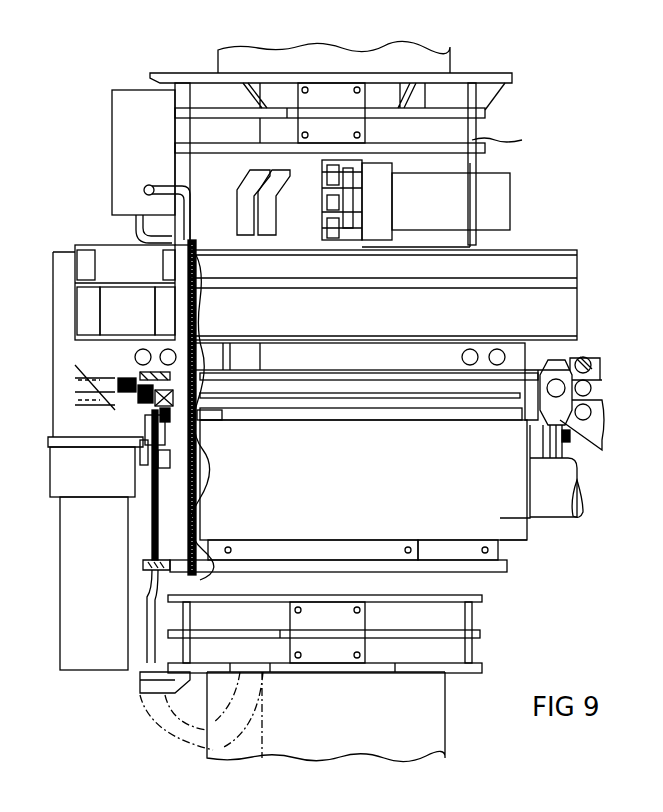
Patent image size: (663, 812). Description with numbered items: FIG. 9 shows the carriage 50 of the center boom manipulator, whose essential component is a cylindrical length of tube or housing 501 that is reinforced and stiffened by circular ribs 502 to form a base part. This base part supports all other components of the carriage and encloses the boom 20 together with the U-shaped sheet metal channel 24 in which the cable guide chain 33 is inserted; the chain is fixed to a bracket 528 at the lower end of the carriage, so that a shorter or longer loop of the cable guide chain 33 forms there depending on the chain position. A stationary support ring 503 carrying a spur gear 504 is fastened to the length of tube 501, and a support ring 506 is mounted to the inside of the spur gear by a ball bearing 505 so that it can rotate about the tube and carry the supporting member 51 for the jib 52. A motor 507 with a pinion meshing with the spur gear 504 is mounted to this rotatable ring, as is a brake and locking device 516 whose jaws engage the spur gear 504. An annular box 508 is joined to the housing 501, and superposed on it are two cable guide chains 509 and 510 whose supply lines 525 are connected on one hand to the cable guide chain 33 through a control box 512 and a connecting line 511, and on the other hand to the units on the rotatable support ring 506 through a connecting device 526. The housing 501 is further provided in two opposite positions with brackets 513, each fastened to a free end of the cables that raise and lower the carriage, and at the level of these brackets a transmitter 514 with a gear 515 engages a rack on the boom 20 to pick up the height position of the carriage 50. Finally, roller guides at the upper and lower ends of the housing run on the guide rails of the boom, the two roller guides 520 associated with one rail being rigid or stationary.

The boom 20 is at (398, 735).
The U-shaped sheet metal channel 24 is at (247, 743).
The cable guide chain 33 is at (157, 737).
The carriage 50 is at (552, 153).
The supporting member 51 is at (510, 520).
The jib 52 is at (557, 503).
The length of tube 501 is at (147, 528).
The circular ribs 502 is at (485, 52).
The stationary support ring 503 is at (323, 373).
The spur gear 504 is at (73, 395).
The ball bearing 505 is at (127, 370).
The support ring 506 is at (180, 458).
The motor 507 is at (70, 620).
The annular box 508 is at (535, 265).
The cable guide chain 509 is at (165, 268).
The cable guide chain 510 is at (88, 308).
The connecting line 511 is at (185, 183).
The control box 512 is at (128, 165).
The bracket 513 is at (272, 183).
The transmitter 514 is at (495, 190).
The gear 515 is at (333, 227).
The brake and locking device 516 is at (590, 362).
The roller guides 520 is at (345, 98).
The supply lines 525 is at (167, 232).
The connecting device 526 is at (68, 292).
The bracket 528 is at (167, 682).